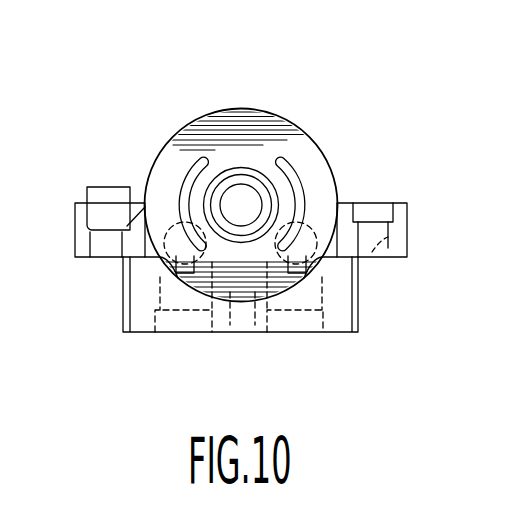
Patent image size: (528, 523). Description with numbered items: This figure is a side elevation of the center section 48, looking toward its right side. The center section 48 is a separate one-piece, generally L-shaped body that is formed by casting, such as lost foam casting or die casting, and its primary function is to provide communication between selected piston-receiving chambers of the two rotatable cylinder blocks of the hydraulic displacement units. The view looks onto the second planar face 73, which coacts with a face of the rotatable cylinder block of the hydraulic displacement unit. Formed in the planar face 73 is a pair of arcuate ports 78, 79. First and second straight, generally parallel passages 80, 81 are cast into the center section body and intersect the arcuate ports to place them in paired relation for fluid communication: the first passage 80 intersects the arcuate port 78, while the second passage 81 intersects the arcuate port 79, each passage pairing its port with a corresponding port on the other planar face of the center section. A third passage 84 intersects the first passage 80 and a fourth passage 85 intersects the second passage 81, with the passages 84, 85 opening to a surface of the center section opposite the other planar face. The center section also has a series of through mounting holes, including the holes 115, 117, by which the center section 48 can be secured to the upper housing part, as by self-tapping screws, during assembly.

The center section 48 is at (415, 230).
The second planar face 73 is at (258, 108).
The arcuate port 78 is at (288, 165).
The arcuate port 79 is at (197, 160).
The first passage 80 is at (312, 228).
The second passage 81 is at (150, 263).
The third passage 84 is at (305, 333).
The fourth passage 85 is at (193, 333).
The through mounting hole 115 is at (110, 187).
The through mounting hole 117 is at (368, 257).